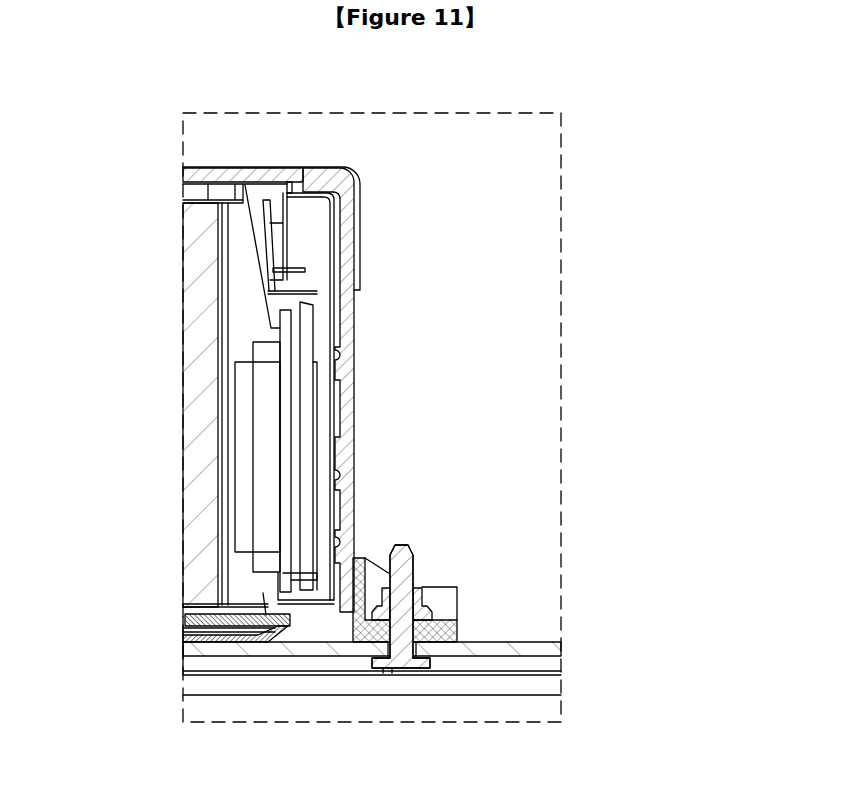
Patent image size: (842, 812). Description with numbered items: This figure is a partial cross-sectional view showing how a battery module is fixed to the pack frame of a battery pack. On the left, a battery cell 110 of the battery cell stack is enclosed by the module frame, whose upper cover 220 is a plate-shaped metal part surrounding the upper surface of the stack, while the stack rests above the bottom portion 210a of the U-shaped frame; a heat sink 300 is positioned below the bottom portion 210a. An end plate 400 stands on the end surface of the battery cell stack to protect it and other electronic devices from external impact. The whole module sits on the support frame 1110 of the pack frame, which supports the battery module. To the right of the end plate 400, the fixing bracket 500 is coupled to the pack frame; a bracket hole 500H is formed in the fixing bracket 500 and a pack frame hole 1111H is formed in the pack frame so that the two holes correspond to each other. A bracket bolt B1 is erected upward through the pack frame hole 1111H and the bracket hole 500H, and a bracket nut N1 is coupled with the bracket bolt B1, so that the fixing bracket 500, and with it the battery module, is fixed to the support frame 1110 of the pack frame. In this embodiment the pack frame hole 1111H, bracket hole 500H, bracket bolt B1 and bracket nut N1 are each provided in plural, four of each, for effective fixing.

The upper cover 220 is at (192, 173).
The battery cell 110 is at (192, 286).
The end plate 400 is at (348, 318).
The bottom portion 210a is at (186, 618).
The heat sink 300 is at (185, 641).
The support frame 1110 is at (553, 649).
The fixing bracket 500 is at (453, 629).
The bracket hole 500H is at (411, 634).
The bracket nut N1 is at (419, 592).
The bracket bolt B1 is at (398, 545).
The pack frame hole 1111H is at (410, 650).